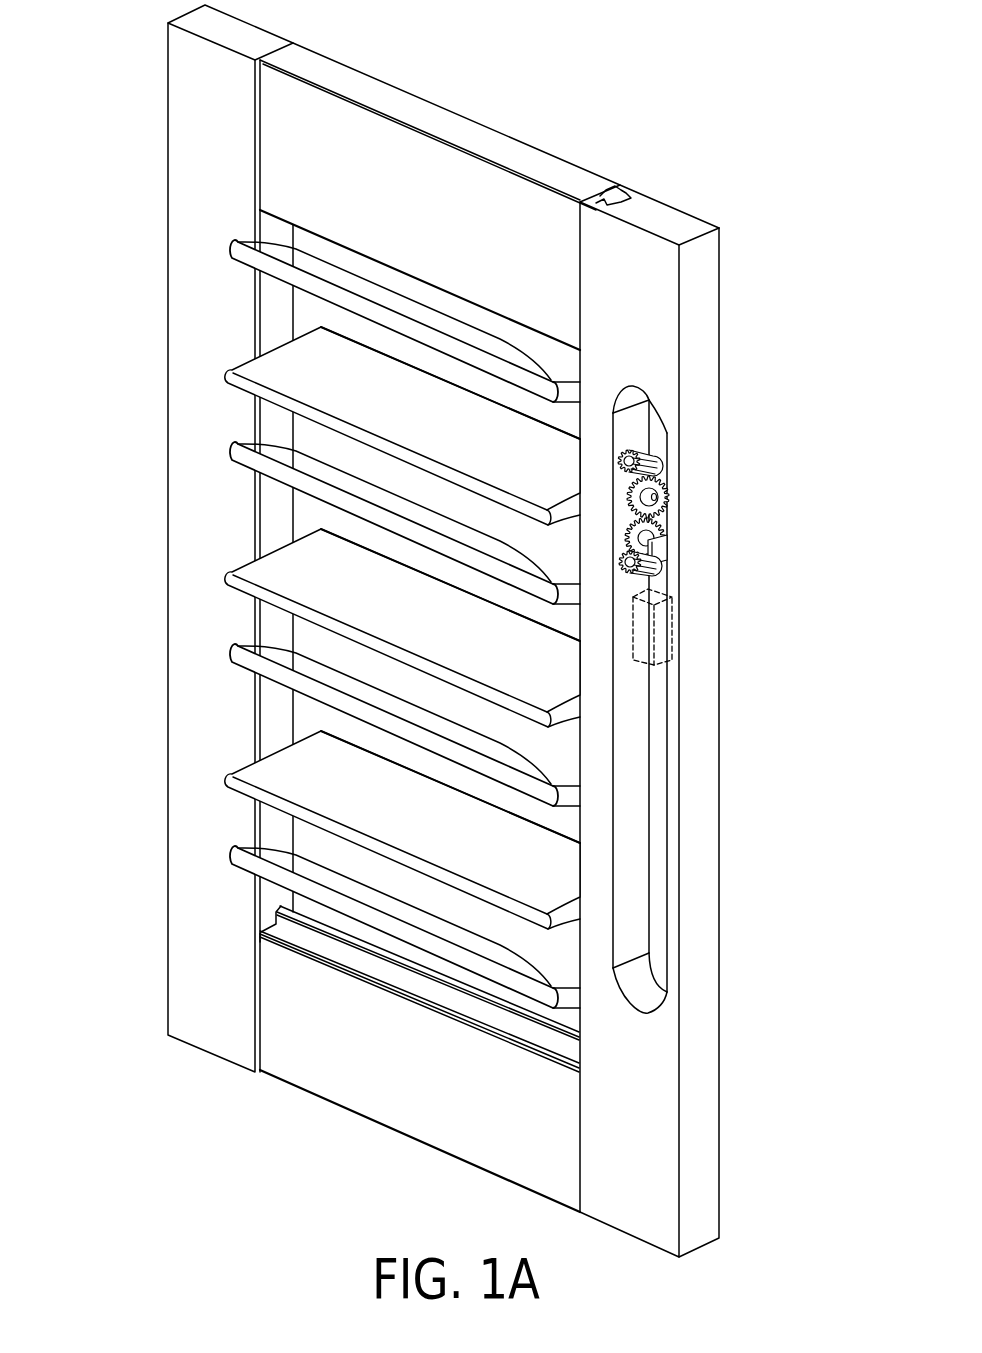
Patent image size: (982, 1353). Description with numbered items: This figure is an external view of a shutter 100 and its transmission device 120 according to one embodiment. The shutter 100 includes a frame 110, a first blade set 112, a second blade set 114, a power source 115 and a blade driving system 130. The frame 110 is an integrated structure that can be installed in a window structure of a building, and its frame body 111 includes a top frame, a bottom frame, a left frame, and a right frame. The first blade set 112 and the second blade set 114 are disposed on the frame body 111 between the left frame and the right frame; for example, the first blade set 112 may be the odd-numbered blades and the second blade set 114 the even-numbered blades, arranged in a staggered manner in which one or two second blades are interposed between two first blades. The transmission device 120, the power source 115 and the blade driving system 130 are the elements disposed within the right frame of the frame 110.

The shutter 100 is at (72, 14).
The frame 110 is at (604, 148).
The frame body 111 is at (677, 224).
The first blade set 112 is at (233, 245).
The second blade set 114 is at (236, 373).
The power source 115 is at (672, 628).
The transmission device 120 is at (728, 445).
The blade driving system 130 is at (655, 426).